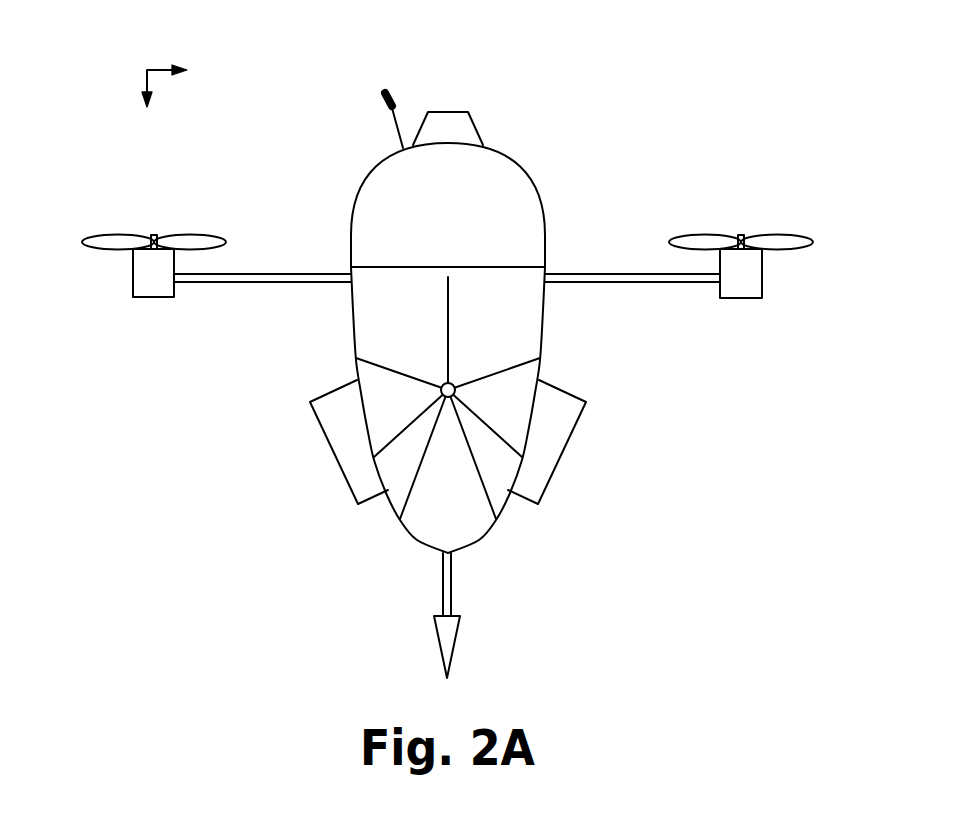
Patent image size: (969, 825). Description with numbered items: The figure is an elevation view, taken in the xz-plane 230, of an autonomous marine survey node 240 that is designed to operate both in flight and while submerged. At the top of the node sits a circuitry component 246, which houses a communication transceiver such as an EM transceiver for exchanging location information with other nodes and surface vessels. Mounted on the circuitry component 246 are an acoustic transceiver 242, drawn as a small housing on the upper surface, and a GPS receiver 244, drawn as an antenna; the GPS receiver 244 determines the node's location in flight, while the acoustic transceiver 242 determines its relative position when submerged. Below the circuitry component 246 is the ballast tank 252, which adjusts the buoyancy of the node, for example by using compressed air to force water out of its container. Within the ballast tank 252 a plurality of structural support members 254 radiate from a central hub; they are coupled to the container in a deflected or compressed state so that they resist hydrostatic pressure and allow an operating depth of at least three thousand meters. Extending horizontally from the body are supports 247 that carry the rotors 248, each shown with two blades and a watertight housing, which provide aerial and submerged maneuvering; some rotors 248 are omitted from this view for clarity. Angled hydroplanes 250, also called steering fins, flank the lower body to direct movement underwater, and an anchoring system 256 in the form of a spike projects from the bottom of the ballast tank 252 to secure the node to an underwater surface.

The xz-plane 230 is at (147, 70).
The autonomous marine survey node 240 is at (631, 54).
The acoustic transceiver 242 is at (450, 112).
The GPS receiver 244 is at (390, 118).
The circuitry component 246 is at (375, 172).
The supports 247 is at (286, 273).
The rotors 248 is at (133, 278).
The hydroplanes 250 is at (337, 457).
The ballast tank 252 is at (354, 322).
The structural support members 254 is at (357, 358).
The anchoring system 256 is at (441, 654).